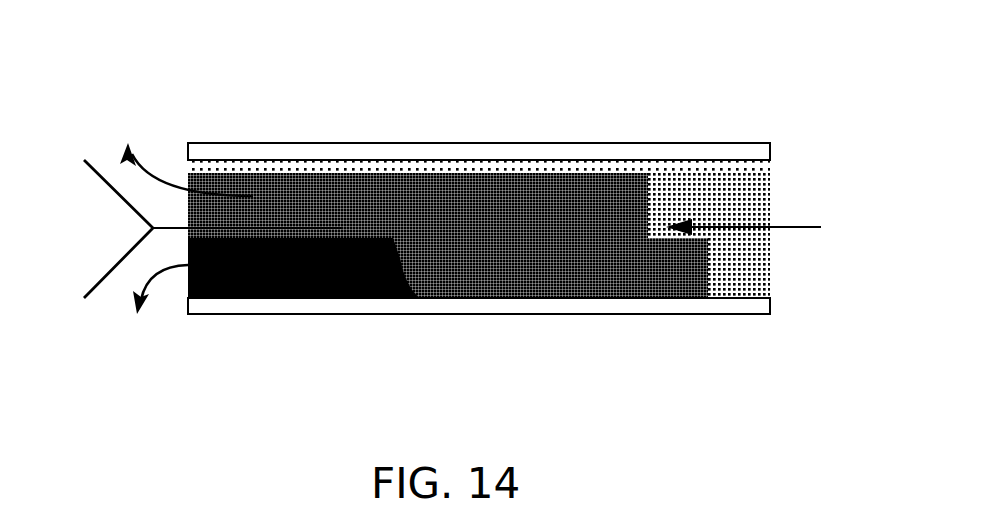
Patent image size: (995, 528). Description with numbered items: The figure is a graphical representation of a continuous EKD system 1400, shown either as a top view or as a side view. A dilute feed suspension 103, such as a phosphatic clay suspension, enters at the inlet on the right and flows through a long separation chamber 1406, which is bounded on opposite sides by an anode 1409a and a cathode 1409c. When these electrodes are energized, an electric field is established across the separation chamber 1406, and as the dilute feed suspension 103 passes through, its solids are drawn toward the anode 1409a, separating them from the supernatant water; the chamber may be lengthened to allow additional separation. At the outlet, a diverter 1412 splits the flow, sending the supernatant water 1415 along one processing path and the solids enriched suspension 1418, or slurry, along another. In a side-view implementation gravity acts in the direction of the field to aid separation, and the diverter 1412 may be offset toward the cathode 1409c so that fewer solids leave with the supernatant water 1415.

The continuous EKD system 1400 is at (249, 47).
The separation chamber 1406 is at (642, 268).
The cathode 1409c is at (438, 140).
The anode 1409a is at (430, 293).
The diverter 1412 is at (128, 207).
The supernatant water 1415 is at (145, 170).
The solids enriched suspension 1418 is at (145, 268).
The dilute feed suspension 103 is at (777, 219).